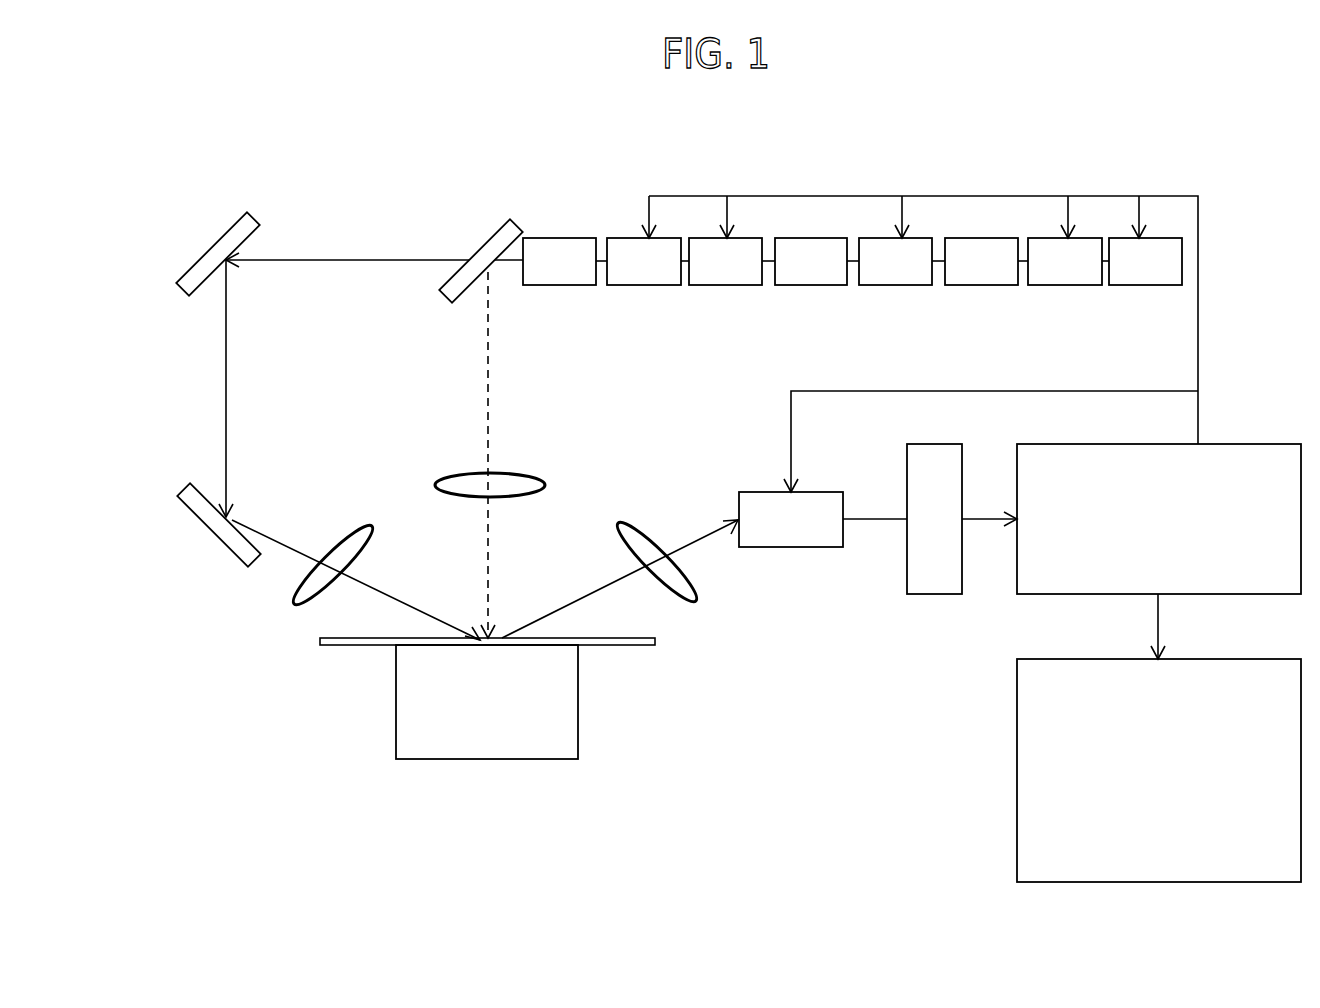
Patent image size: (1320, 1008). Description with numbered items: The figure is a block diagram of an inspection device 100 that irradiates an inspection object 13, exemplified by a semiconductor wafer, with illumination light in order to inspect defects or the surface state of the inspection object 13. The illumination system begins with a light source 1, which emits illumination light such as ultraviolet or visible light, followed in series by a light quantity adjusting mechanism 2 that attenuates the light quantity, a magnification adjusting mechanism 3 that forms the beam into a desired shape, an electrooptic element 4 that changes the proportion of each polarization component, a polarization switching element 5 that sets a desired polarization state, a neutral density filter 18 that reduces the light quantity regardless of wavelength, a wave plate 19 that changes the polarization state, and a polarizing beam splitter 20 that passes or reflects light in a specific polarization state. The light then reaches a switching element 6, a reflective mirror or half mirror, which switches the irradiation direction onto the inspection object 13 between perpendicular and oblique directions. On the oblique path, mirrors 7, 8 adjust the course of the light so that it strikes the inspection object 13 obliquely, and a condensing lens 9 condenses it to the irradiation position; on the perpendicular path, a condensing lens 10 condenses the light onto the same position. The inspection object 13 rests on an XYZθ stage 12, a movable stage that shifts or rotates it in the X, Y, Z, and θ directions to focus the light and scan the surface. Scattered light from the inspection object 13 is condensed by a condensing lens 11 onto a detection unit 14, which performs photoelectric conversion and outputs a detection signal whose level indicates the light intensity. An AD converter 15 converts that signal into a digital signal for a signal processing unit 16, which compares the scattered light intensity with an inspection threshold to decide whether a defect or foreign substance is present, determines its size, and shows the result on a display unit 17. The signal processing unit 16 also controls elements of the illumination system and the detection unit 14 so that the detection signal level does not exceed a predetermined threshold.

The inspection device 100 is at (345, 213).
The light source 1 is at (1146, 285).
The light quantity adjusting mechanism 2 is at (1065, 285).
The magnification adjusting mechanism 3 is at (982, 285).
The electrooptic element 4 is at (896, 285).
The polarization switching element 5 is at (812, 285).
The neutral density filter 18 is at (726, 285).
The wave plate 19 is at (644, 285).
The polarizing beam splitter 20 is at (560, 285).
The switching element 6 is at (480, 247).
The mirror 7 is at (215, 244).
The mirror 8 is at (228, 548).
The condensing lens 9 is at (345, 535).
The condensing lens 10 is at (450, 480).
The condensing lens 11 is at (627, 525).
The XYZθ stage 12 is at (578, 712).
The inspection object 13 is at (628, 647).
The detection unit 14 is at (788, 547).
The AD converter 15 is at (930, 594).
The signal processing unit 16 is at (1275, 443).
The display unit 17 is at (1017, 810).